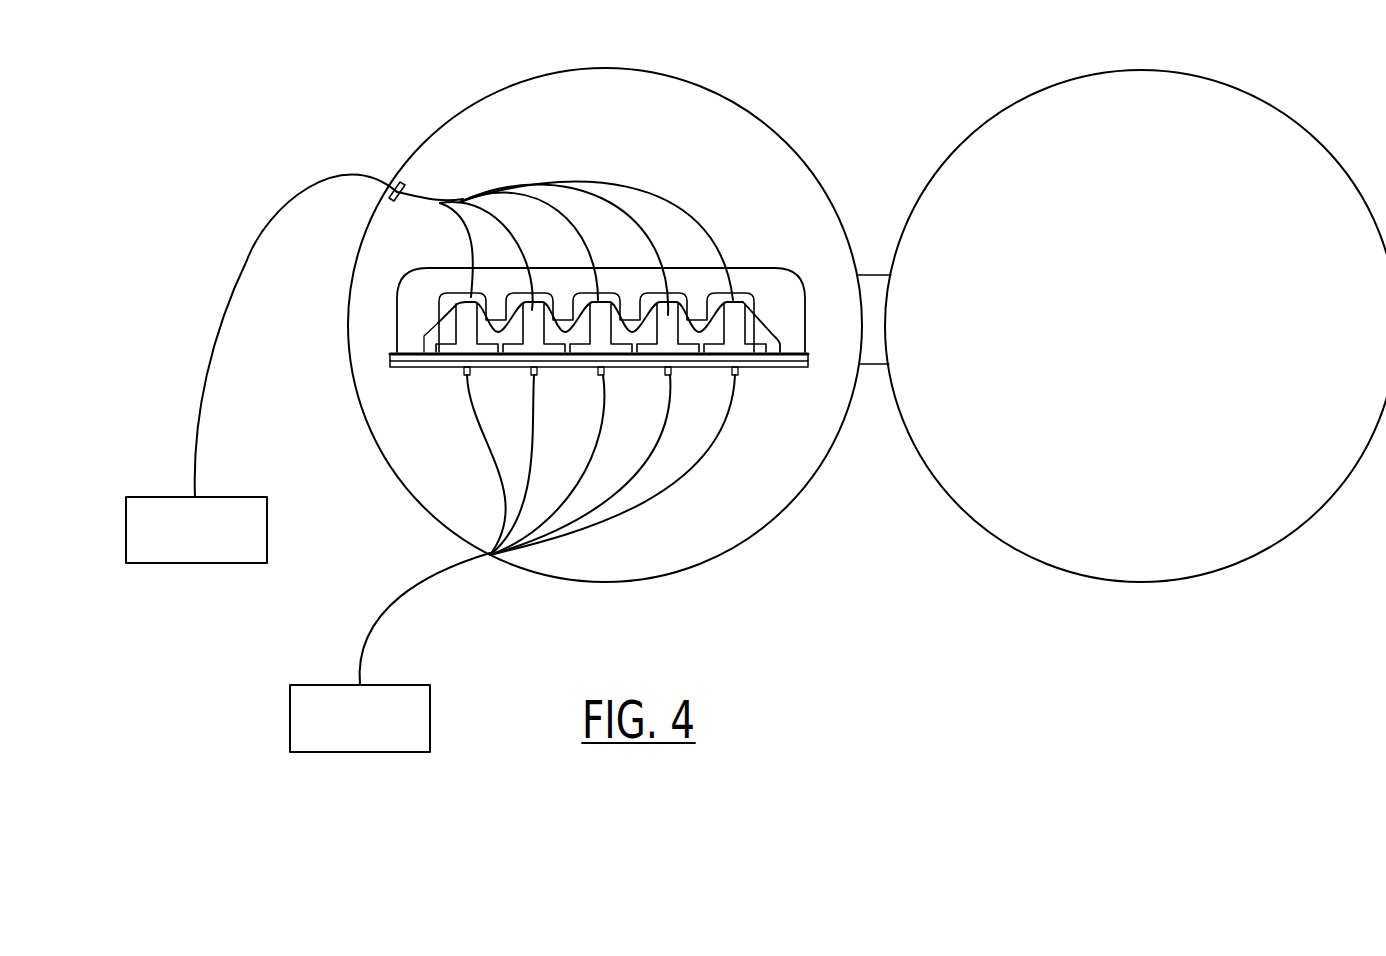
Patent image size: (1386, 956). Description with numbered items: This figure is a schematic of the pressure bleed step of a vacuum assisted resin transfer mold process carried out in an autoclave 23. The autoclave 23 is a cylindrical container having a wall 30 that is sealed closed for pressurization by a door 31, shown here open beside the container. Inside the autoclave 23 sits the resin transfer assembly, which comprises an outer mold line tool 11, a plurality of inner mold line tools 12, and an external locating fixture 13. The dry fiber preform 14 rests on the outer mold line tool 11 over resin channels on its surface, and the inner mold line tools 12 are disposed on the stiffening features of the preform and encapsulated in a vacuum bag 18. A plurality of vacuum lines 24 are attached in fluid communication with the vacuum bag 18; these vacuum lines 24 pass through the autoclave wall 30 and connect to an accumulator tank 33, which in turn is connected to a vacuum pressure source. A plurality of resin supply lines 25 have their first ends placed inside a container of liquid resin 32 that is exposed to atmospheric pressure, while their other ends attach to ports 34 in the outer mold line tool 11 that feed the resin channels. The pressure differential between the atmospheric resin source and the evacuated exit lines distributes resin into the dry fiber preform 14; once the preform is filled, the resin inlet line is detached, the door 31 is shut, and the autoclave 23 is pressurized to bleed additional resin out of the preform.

The outer mold line tool 11 is at (397, 370).
The inner mold line tools 12 is at (530, 300).
The external locating fixture 13 is at (782, 290).
The dry fiber preform 14 is at (780, 364).
The vacuum bag 18 is at (438, 323).
The autoclave 23 is at (765, 80).
The vacuum lines 24 is at (462, 198).
The resin supply lines 25 is at (483, 565).
The wall 30 is at (754, 536).
The door 31 is at (1141, 582).
The container of liquid resin 32 is at (393, 685).
The accumulator tank 33 is at (215, 496).
The ports 34 is at (463, 375).